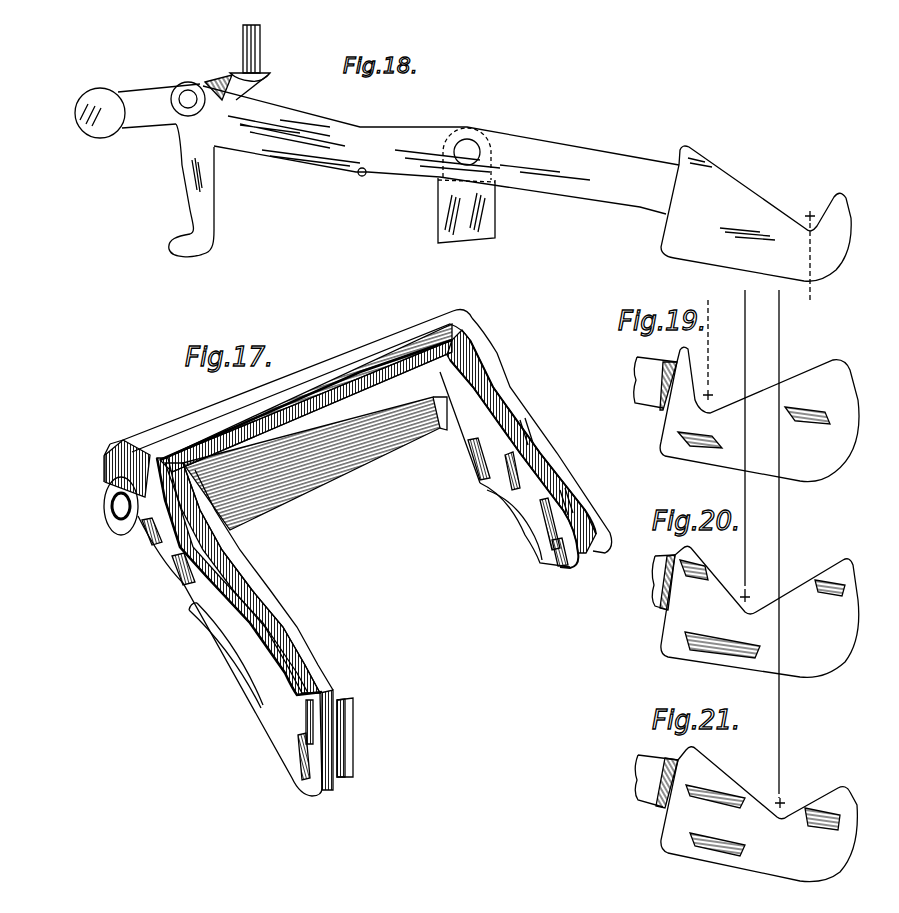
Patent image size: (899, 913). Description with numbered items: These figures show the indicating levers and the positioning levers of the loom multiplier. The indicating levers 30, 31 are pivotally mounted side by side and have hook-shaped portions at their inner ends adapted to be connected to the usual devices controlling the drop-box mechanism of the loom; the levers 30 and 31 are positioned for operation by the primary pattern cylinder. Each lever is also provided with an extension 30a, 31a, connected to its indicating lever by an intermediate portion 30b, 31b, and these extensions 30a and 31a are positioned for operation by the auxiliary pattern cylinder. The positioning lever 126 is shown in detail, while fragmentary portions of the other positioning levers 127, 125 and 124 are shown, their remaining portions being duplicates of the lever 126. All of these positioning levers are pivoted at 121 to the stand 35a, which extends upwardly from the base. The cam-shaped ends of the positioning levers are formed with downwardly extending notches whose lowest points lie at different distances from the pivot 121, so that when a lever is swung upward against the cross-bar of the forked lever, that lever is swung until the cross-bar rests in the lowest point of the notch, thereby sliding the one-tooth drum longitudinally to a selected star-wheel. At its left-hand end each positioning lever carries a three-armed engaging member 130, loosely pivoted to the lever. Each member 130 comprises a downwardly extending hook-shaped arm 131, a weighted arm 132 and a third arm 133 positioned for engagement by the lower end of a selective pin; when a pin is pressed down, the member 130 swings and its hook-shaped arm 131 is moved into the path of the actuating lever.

In FIG. 17, the indicating lever 30 is at (178, 585).
In FIG. 17, the extension 30a is at (523, 419).
In FIG. 17, the intermediate portion 30b is at (307, 368).
In FIG. 17, the indicating lever 31 is at (250, 574).
In FIG. 17, the extension 31a is at (470, 461).
In FIG. 17, the intermediate portion 31b is at (334, 478).
In FIG. 18, the pivot 121 is at (469, 148).
In FIG. 21, the positioning lever 124 is at (828, 798).
In FIG. 20, the positioning lever 125 is at (837, 572).
In FIG. 18, the positioning lever 126 is at (546, 153).
In FIG. 19, the positioning lever 127 is at (643, 367).
In FIG. 18, the three-armed engaging member 130 is at (209, 84).
In FIG. 18, the hook-shaped arm 131 is at (206, 184).
In FIG. 18, the weighted arm 132 is at (130, 88).
In FIG. 18, the third arm 133 is at (262, 87).
In FIG. 18, the stand 35a is at (484, 221).